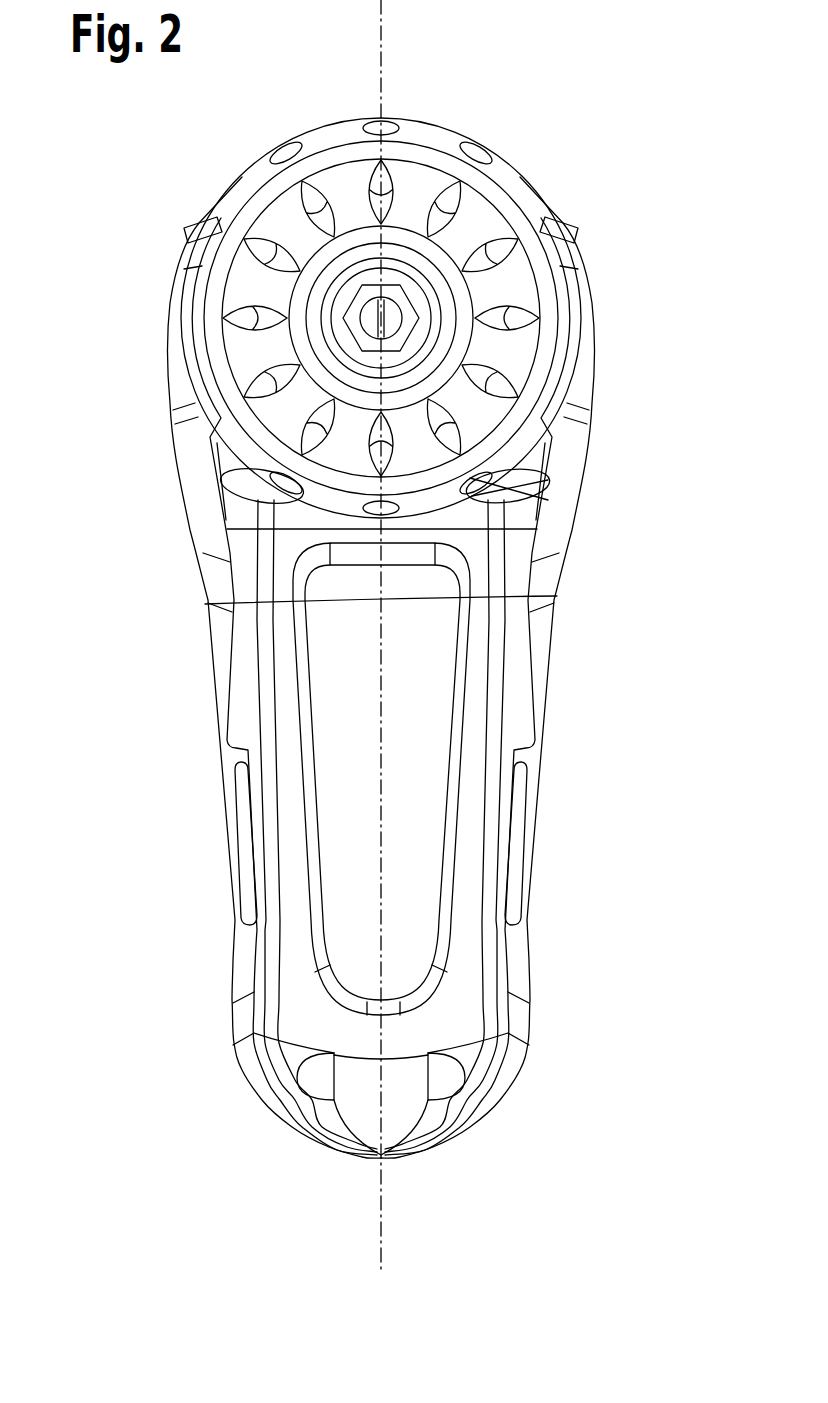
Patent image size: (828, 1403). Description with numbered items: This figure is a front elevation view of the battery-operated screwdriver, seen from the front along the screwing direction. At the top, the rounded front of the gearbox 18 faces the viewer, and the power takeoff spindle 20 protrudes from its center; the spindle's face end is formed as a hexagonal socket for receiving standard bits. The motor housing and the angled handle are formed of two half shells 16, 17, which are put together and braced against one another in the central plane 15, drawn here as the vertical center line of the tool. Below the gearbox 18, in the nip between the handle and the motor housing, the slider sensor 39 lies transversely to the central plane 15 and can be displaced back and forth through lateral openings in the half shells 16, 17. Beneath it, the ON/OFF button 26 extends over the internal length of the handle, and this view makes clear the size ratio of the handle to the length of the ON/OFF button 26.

The central plane 15 is at (378, 10).
The gearbox 18 is at (425, 137).
The power takeoff spindle 20 is at (398, 276).
The slider sensor 39 is at (518, 488).
The ON/OFF button 26 is at (428, 735).
The half shell 17 is at (348, 1028).
The half shell 16 is at (420, 1030).